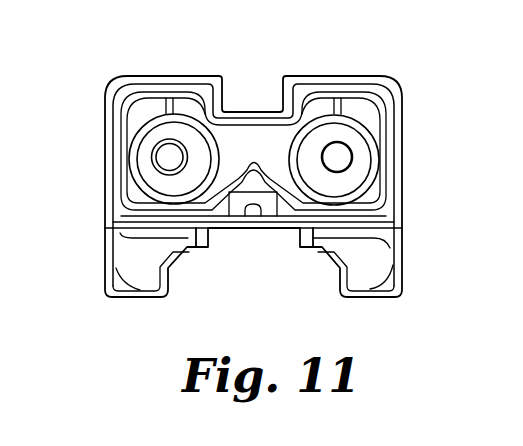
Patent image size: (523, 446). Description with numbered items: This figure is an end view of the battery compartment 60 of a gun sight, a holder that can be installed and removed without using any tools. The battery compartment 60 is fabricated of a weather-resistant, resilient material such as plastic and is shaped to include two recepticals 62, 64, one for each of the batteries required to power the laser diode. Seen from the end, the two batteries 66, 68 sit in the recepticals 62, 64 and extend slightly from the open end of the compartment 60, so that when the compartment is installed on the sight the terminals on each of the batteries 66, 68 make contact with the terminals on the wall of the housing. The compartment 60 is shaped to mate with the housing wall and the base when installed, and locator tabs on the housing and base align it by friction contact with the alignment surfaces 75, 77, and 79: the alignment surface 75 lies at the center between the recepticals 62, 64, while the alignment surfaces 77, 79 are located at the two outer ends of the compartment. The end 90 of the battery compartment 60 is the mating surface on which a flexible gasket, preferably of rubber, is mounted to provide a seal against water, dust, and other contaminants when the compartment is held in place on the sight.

The battery compartment 60 is at (291, 76).
The receptical 62 is at (138, 112).
The receptical 64 is at (364, 123).
The battery 66 is at (145, 163).
The battery 68 is at (362, 157).
The alignment surface 75 is at (259, 220).
The alignment surface 77 is at (113, 271).
The alignment surface 79 is at (396, 264).
The end 90 is at (108, 160).